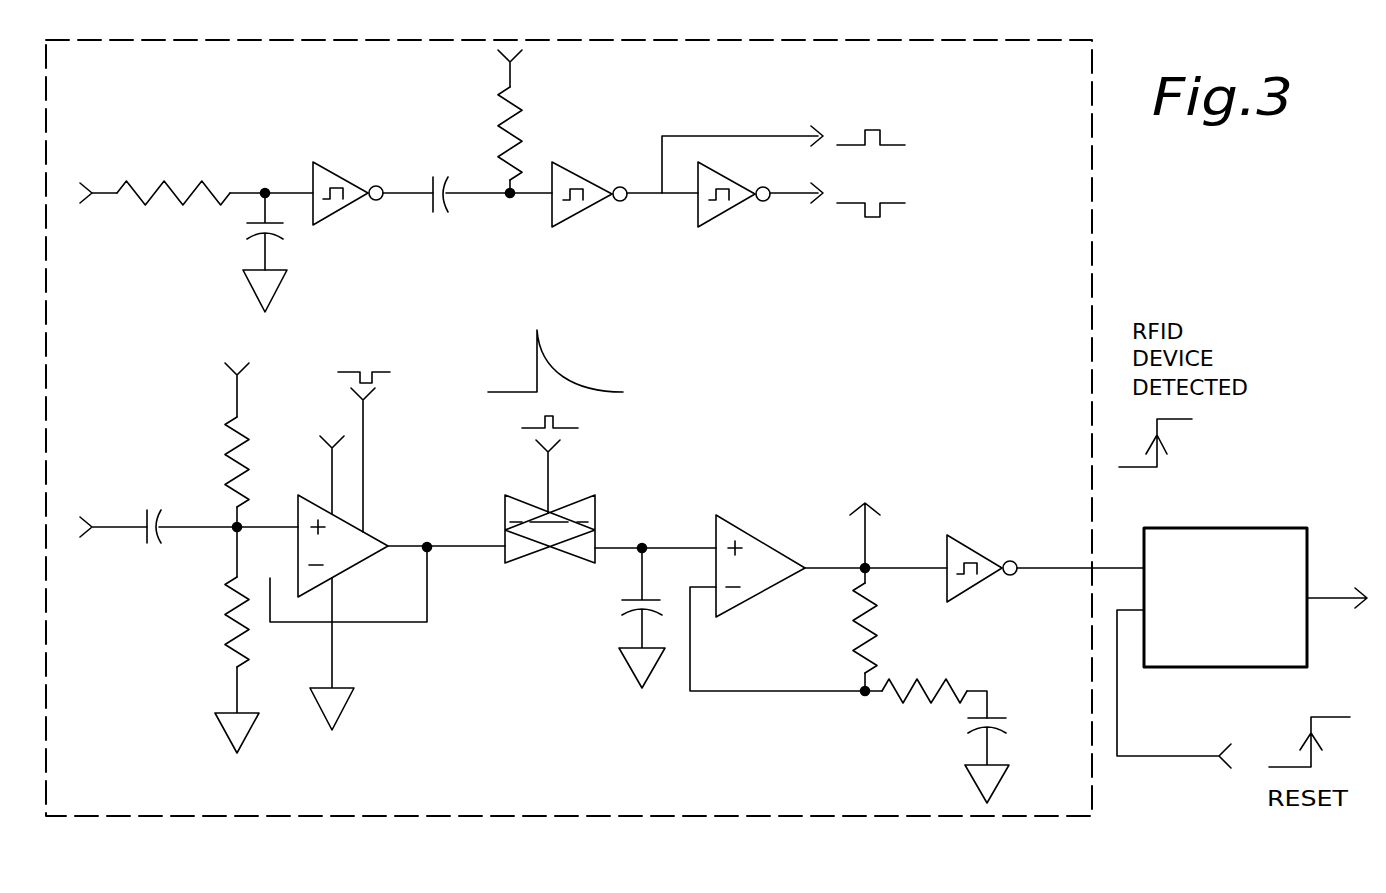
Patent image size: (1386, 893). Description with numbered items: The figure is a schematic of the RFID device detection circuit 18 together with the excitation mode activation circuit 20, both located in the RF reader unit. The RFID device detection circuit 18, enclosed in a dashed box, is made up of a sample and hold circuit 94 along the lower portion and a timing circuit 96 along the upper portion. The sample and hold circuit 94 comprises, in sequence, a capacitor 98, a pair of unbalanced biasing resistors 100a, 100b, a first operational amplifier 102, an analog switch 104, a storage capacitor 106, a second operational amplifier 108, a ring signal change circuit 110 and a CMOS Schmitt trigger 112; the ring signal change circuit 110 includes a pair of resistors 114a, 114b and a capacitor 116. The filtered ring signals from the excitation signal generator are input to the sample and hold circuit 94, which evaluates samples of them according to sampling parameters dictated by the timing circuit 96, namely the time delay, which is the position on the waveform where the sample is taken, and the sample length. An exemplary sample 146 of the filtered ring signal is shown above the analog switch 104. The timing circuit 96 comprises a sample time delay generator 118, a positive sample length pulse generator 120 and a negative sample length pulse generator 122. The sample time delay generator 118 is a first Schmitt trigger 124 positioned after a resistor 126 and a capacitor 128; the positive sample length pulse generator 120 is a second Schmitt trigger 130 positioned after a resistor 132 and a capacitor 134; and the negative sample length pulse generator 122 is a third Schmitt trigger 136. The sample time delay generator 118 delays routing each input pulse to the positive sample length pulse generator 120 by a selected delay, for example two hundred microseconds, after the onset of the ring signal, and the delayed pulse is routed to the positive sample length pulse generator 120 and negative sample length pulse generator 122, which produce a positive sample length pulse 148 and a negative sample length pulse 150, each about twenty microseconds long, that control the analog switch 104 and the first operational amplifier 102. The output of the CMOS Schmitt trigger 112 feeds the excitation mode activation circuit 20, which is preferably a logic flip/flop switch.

The RFID device detection circuit 18 is at (1092, 230).
The excitation mode activation circuit 20 is at (1250, 530).
The sample and hold circuit 94 is at (849, 587).
The timing circuit 96 is at (696, 254).
The capacitor 98 is at (153, 505).
The unbalanced biasing resistor 100a is at (233, 432).
The unbalanced biasing resistor 100b is at (226, 625).
The first operational amplifier 102 is at (375, 530).
The analog switch 104 is at (515, 552).
The storage capacitor 106 is at (622, 608).
The second operational amplifier 108 is at (733, 520).
The ring signal change circuit 110 is at (1033, 514).
The CMOS Schmitt trigger 112 is at (963, 552).
The resistor 114a is at (860, 614).
The resistor 114b is at (897, 685).
The capacitor 116 is at (970, 722).
The sample time delay generator 118 is at (279, 230).
The positive sample length pulse generator 120 is at (564, 173).
The negative sample length pulse generator 122 is at (750, 211).
The first Schmitt trigger 124 is at (332, 185).
The resistor 126 is at (172, 190).
The capacitor 128 is at (242, 230).
The second Schmitt trigger 130 is at (575, 185).
The resistor 132 is at (518, 118).
The capacitor 134 is at (437, 215).
The third Schmitt trigger 136 is at (717, 185).
The exemplary sample 146 is at (584, 365).
The positive sample length pulse 148 is at (888, 143).
The negative sample length pulse 150 is at (880, 215).